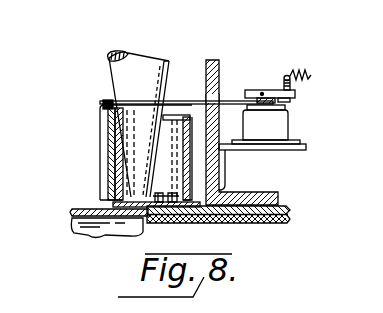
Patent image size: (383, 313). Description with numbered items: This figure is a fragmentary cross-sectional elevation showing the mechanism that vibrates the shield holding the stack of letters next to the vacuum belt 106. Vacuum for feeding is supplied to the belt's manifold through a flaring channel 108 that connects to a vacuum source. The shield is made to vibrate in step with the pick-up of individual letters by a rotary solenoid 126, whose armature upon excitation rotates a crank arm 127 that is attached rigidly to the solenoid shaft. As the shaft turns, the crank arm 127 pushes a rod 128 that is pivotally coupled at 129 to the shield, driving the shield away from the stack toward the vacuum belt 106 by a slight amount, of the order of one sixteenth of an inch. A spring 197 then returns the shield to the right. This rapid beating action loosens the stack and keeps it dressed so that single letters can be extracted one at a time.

The vacuum belt 106 is at (99, 142).
The flaring channel 108 is at (158, 63).
The rotary solenoid 126 is at (283, 125).
The crank arm 127 is at (272, 88).
The rod 128 is at (180, 103).
The pivotal coupling 129 is at (107, 101).
The spring 197 is at (312, 74).